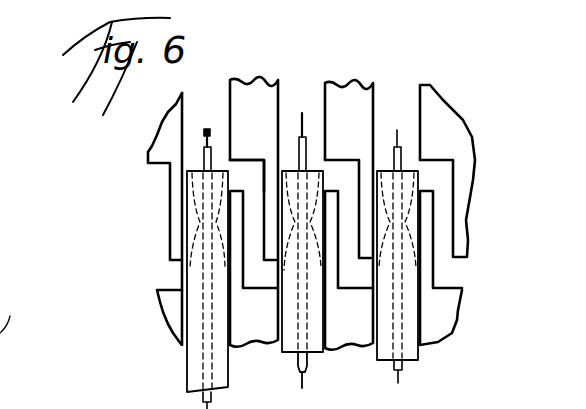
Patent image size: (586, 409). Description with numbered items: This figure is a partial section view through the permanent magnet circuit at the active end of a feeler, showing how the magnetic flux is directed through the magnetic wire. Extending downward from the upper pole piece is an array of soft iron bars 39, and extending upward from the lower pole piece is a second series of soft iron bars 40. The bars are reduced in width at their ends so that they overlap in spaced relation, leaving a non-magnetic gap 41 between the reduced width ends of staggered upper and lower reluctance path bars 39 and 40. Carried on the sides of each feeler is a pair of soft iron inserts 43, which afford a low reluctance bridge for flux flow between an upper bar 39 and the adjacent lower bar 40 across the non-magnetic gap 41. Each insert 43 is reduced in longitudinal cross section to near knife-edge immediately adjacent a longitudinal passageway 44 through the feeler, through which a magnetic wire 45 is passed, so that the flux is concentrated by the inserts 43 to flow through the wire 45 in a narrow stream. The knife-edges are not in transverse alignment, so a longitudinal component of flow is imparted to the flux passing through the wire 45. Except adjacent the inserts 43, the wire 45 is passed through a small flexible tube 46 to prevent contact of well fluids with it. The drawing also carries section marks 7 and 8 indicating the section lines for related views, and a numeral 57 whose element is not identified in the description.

The soft iron bars 39 is at (170, 240).
The soft iron bars 40 is at (237, 261).
The non-magnetic gap 41 is at (376, 204).
The soft iron inserts 43 is at (200, 213).
The longitudinal passageway 44 is at (233, 170).
The magnetic wire 45 is at (205, 133).
The small flexible tube 46 is at (301, 146).
The element 57 is at (9, 316).
The section line 7- 7 is at (112, 222).
The section line 8- 8 is at (112, 320).